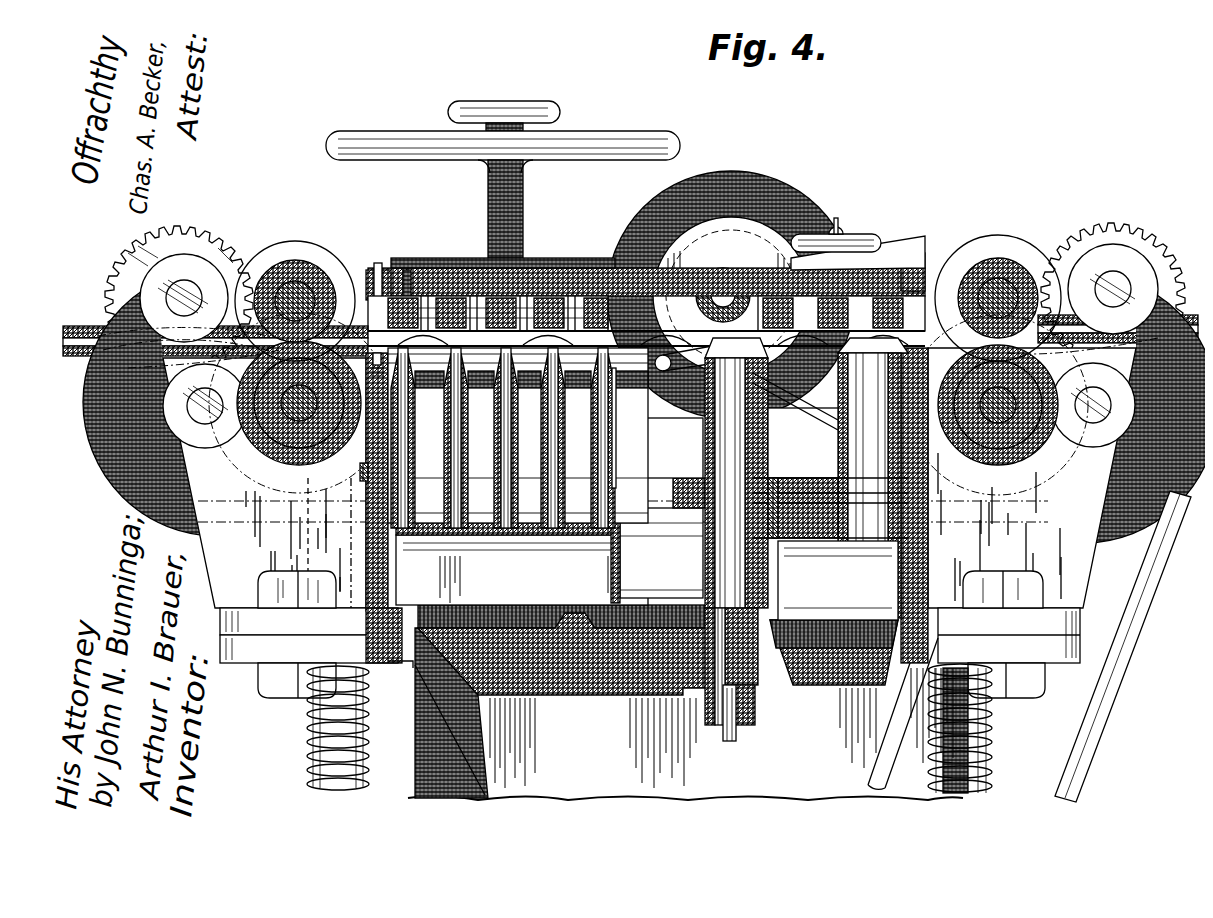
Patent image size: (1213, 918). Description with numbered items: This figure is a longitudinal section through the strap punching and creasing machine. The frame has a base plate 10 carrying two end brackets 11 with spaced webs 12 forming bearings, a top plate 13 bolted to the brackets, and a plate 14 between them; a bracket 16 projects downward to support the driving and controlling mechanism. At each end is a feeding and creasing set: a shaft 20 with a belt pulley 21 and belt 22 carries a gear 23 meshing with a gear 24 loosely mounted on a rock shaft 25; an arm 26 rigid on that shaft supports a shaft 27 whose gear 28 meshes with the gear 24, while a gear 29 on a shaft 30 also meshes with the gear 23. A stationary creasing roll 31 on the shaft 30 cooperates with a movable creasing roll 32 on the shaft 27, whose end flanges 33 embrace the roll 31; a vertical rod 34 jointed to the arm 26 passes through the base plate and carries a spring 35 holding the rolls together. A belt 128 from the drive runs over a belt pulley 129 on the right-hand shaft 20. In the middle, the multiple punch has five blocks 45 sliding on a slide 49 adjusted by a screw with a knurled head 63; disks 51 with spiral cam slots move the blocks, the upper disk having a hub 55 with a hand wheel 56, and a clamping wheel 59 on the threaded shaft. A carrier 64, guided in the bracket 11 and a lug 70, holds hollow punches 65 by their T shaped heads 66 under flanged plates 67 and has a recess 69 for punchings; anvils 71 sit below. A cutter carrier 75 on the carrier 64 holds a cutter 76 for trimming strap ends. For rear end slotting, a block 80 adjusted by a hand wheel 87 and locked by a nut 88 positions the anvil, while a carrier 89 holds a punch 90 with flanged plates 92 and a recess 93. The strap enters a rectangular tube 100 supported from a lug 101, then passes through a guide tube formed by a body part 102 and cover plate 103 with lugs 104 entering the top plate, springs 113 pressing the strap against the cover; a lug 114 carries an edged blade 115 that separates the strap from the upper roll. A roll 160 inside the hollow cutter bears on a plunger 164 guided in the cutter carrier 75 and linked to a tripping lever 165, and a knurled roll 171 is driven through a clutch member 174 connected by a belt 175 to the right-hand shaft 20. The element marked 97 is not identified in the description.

The base plate 10 is at (309, 649).
The end bracket 11 is at (1080, 603).
The spaced web 12 is at (1088, 570).
The top plate 13 is at (860, 262).
The plate 14 is at (680, 472).
The bracket 16 is at (685, 714).
The shaft 20 is at (195, 400).
The belt pulley 21 is at (130, 455).
The belt 22 is at (314, 543).
The gear 23 is at (185, 415).
The gear 24 is at (185, 220).
The shaft 25 is at (649, 293).
The arm 26 is at (275, 255).
The shaft 27 is at (305, 275).
The gear 28 is at (292, 252).
The gear 29 is at (262, 430).
The shaft 30 is at (285, 400).
The creasing roll 31 is at (292, 413).
The creasing roll 32 is at (335, 270).
The end flange 33 is at (300, 262).
The vertical rod 34 is at (300, 718).
The spring 35 is at (300, 748).
The block 45 is at (612, 470).
The slide 49 is at (568, 395).
The disk 51 is at (540, 260).
The hub 55 is at (516, 192).
The hand wheel 56 is at (655, 128).
The clamping wheel 59 is at (548, 100).
The knurled head 63 is at (480, 420).
The carrier 64 is at (590, 688).
The punch 65 is at (608, 500).
The T shaped head 66 is at (612, 525).
The flanged plate 67 is at (428, 520).
The recess 69 is at (522, 570).
The lug 70 is at (773, 472).
The anvil 71 is at (445, 290).
The cutter carrier 75 is at (745, 470).
The cutter 76 is at (585, 290).
The block 80 is at (830, 400).
The hand wheel 87 is at (845, 230).
The nut 88 is at (831, 212).
The carrier 89 is at (820, 677).
The punch 90 is at (815, 532).
The flanged plate 92 is at (838, 532).
The recess 93 is at (838, 580).
The block 97 is at (905, 258).
The tube 100 is at (75, 318).
The lug 101 is at (140, 300).
The body part 102 is at (652, 363).
The cover plate 103 is at (642, 240).
The lug 104 is at (398, 262).
The spring 113 is at (400, 262).
The lug 114 is at (1165, 270).
The edged blade 115 is at (1150, 310).
The belt 128 is at (1125, 648).
The belt pulley 129 is at (1090, 530).
The roll 160 is at (712, 350).
The plunger 164 is at (742, 690).
The tripping lever 165 is at (730, 730).
The knurled roll 171 is at (716, 262).
The clutch member 174 is at (770, 200).
The belt 175 is at (870, 248).